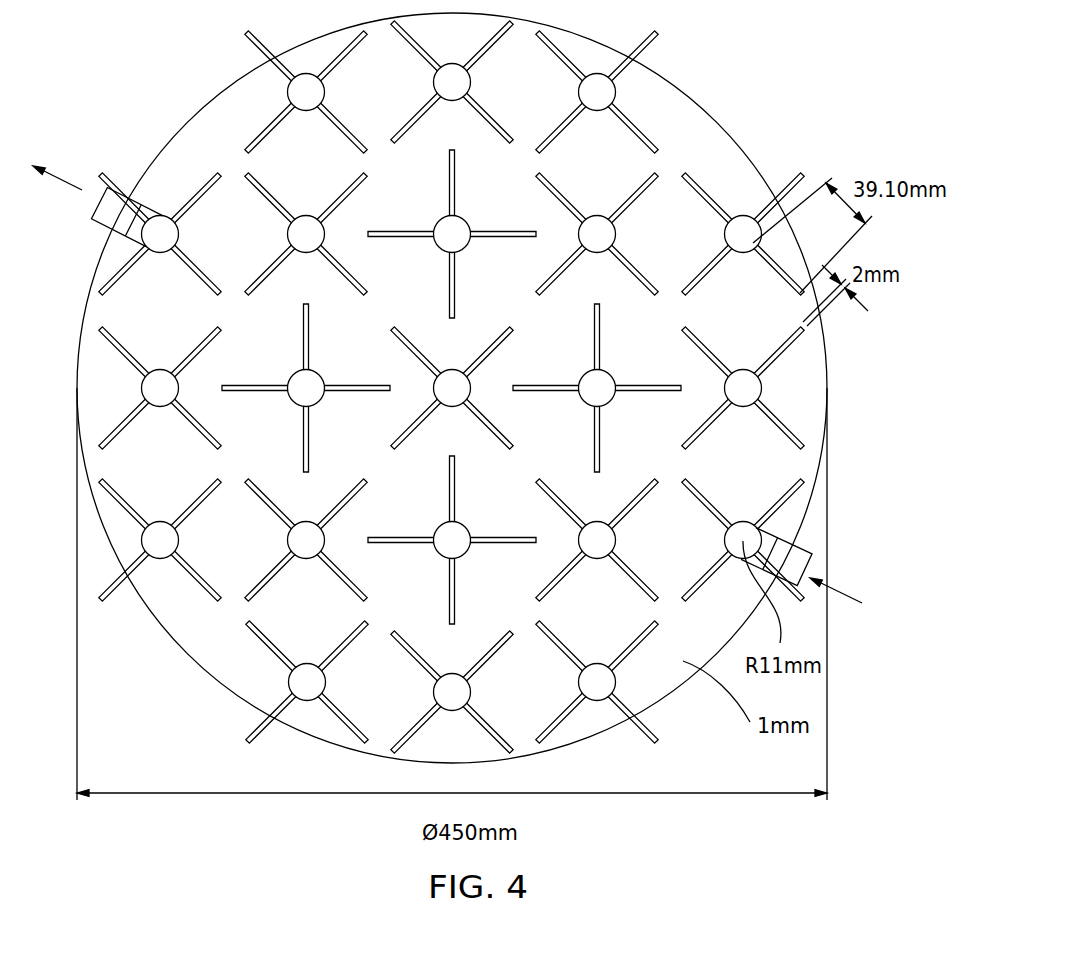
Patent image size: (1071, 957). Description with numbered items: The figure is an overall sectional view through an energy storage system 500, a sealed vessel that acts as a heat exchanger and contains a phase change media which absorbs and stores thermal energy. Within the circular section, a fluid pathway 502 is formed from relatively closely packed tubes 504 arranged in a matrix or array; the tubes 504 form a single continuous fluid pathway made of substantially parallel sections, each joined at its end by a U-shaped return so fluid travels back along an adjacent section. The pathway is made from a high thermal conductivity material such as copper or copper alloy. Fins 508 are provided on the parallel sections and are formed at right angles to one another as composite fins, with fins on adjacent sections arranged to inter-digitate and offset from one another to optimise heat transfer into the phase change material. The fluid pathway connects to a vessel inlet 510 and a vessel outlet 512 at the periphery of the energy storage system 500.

The energy storage system 500 is at (733, 138).
The fluid pathway 502 is at (597, 111).
The tubes 504 is at (452, 234).
The fins 508 is at (678, 249).
The vessel inlet 510 is at (800, 558).
The vessel outlet 512 is at (112, 187).